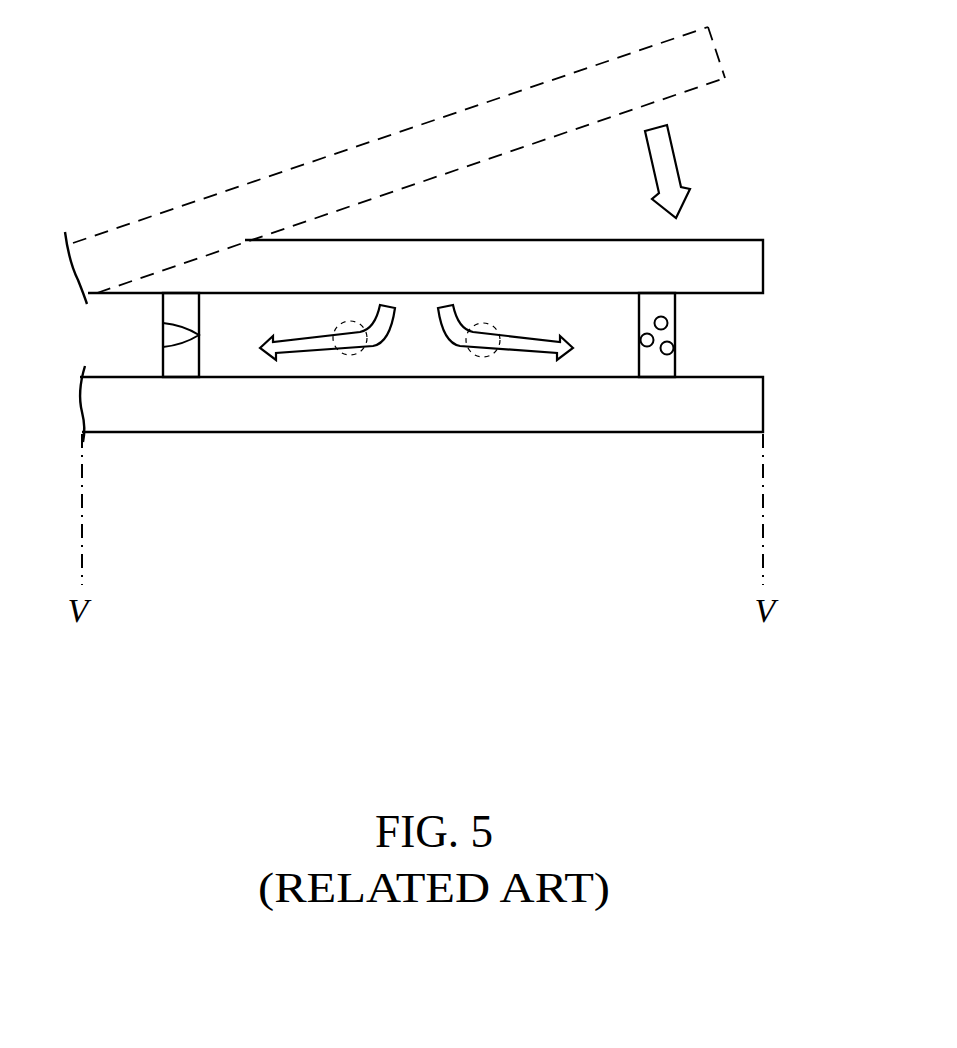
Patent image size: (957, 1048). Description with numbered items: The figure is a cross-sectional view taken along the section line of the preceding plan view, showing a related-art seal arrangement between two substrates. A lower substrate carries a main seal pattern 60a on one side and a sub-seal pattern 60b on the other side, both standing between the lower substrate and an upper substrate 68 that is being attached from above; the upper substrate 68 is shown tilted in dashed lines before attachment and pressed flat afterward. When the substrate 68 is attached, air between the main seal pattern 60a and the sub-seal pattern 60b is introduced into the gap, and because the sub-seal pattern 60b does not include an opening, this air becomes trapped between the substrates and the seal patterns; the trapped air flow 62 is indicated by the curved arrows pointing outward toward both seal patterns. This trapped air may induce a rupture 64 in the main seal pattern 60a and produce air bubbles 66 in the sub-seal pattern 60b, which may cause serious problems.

The substrate 68 is at (372, 104).
The main seal pattern 60a is at (187, 368).
The sub-seal pattern 60b is at (652, 370).
The flow of gas/fluid between plates 62 is at (362, 352).
The rupture 64 is at (182, 347).
The air bubbles 66 is at (673, 355).